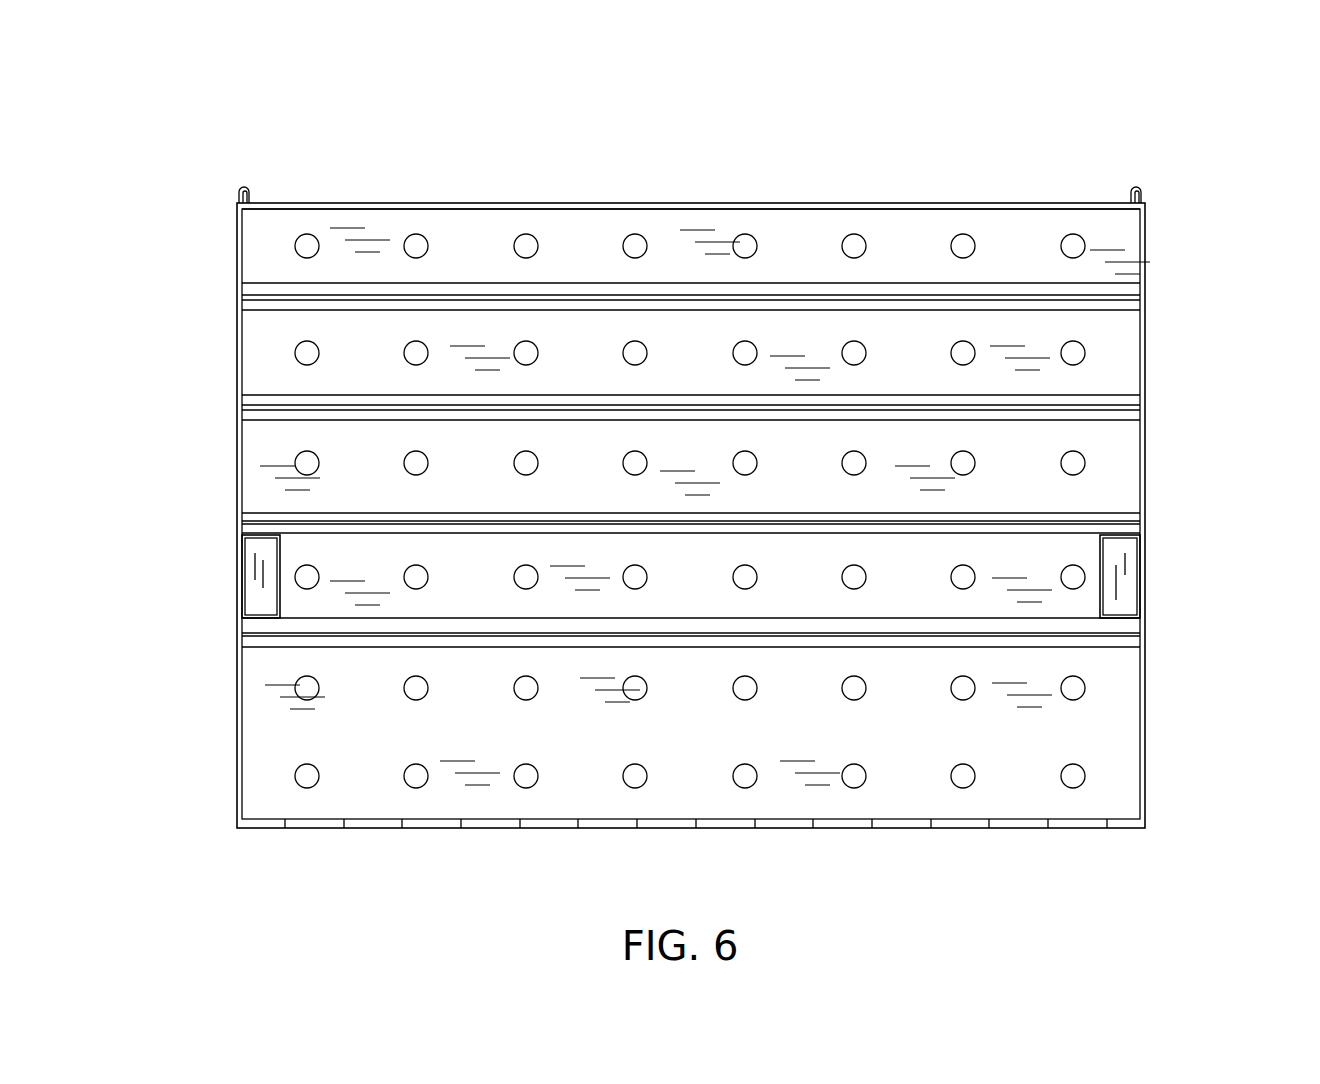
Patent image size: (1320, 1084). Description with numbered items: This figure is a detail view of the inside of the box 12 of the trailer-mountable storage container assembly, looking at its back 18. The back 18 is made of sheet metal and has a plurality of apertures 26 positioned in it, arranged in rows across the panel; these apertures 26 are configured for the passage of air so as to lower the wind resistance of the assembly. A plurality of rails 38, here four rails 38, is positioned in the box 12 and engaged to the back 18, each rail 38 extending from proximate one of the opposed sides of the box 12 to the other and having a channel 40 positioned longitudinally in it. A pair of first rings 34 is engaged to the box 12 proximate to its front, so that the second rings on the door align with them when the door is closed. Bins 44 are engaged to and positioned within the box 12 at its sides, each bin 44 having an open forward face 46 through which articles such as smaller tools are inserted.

The box 12 is at (1145, 236).
The back 18 is at (1117, 777).
The apertures 26 is at (1085, 775).
The first rings 34 is at (1135, 188).
The rails 38 is at (300, 510).
The channel 40 is at (1117, 408).
The bins 44 is at (1100, 548).
The forward face 46 is at (1122, 572).